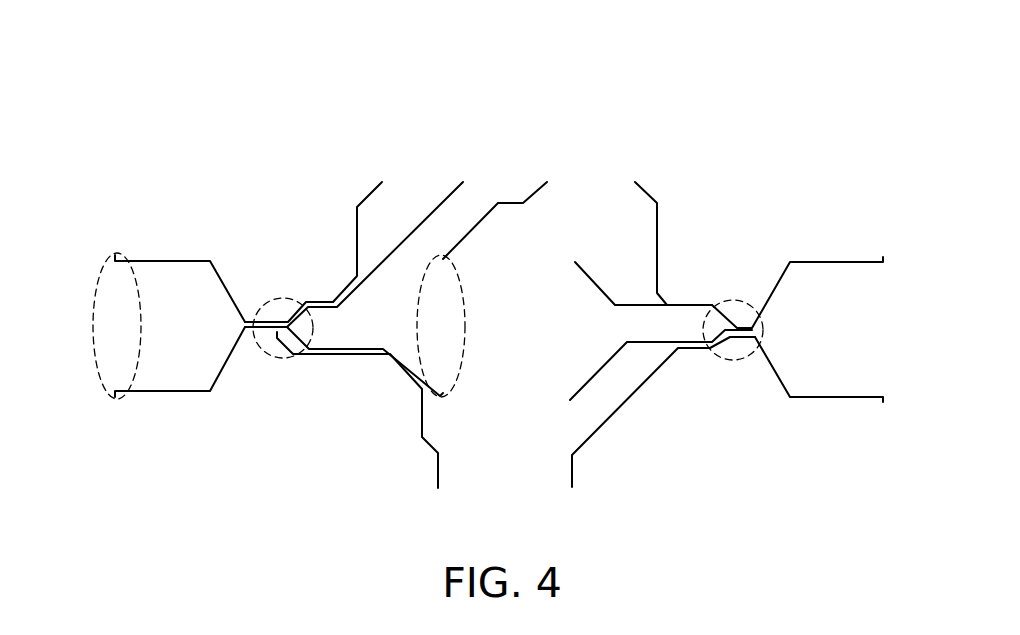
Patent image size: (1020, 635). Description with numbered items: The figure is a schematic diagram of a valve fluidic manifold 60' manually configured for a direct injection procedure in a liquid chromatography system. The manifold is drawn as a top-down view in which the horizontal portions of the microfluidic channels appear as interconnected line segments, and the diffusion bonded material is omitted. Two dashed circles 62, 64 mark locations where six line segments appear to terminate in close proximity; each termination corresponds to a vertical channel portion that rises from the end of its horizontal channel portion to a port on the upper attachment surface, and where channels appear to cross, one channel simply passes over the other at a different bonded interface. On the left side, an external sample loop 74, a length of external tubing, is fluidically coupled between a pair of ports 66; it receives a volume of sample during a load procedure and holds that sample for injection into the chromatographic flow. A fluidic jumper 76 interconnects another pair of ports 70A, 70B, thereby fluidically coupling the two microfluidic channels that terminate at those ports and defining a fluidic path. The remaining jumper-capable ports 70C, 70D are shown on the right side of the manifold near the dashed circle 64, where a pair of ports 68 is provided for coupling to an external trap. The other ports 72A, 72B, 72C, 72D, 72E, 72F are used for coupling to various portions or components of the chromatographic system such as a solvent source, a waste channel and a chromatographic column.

The valve fluidic manifold 60' is at (835, 85).
The dashed circle 62 is at (283, 300).
The dashed circle 64 is at (730, 298).
The pair of ports 66 is at (115, 255).
The pair of ports 68 is at (883, 257).
The port 70A is at (443, 393).
The port 70B is at (446, 262).
The port 70C is at (570, 400).
The port 70D is at (575, 262).
The port 72A is at (382, 182).
The port 72B is at (463, 182).
The port 72C is at (438, 488).
The port 72D is at (547, 182).
The port 72E is at (572, 487).
The port 72F is at (635, 182).
The external sample loop 74 is at (143, 327).
The fluidic jumper 76 is at (416, 327).